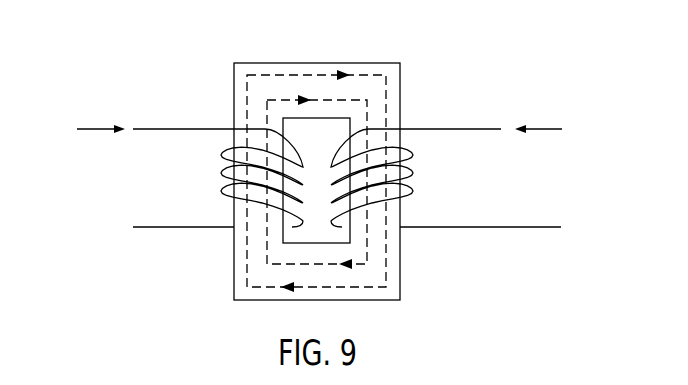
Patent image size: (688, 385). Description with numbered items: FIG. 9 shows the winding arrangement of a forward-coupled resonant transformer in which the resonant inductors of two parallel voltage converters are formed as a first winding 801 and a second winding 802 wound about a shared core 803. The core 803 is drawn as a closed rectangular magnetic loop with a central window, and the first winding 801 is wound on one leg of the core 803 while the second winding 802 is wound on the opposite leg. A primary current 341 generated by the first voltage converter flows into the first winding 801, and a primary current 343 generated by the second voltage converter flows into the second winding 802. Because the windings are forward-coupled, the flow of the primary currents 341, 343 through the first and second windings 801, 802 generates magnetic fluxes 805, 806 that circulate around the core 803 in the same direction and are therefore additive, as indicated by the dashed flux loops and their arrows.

The primary current 341 is at (99, 128).
The primary current 343 is at (540, 128).
The first winding 801 is at (222, 153).
The second winding 802 is at (413, 155).
The core 803 is at (234, 74).
The magnetic flux 805 is at (307, 75).
The magnetic flux 806 is at (367, 249).